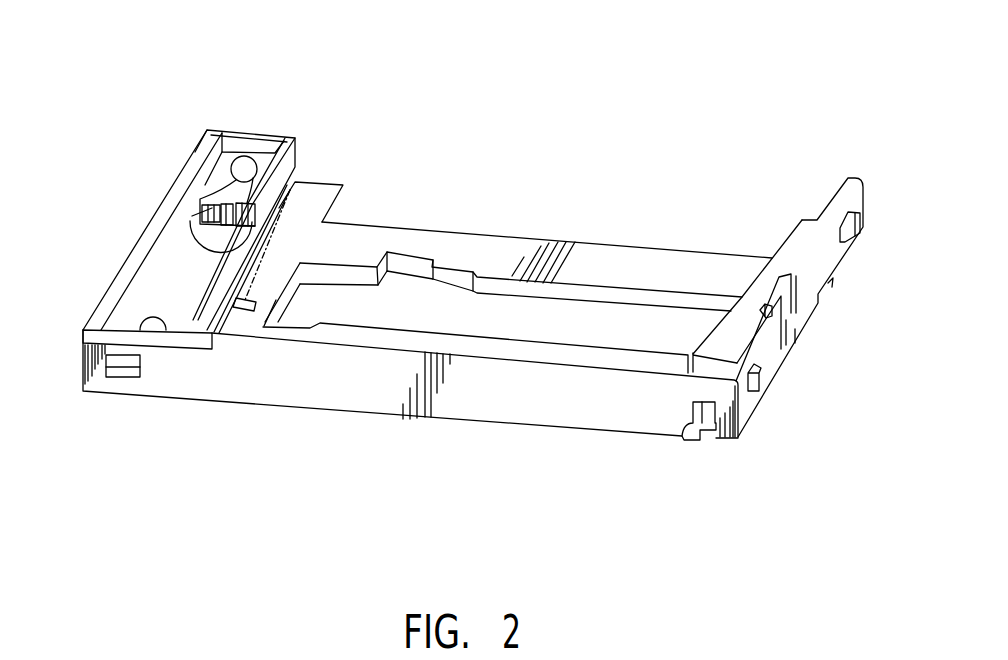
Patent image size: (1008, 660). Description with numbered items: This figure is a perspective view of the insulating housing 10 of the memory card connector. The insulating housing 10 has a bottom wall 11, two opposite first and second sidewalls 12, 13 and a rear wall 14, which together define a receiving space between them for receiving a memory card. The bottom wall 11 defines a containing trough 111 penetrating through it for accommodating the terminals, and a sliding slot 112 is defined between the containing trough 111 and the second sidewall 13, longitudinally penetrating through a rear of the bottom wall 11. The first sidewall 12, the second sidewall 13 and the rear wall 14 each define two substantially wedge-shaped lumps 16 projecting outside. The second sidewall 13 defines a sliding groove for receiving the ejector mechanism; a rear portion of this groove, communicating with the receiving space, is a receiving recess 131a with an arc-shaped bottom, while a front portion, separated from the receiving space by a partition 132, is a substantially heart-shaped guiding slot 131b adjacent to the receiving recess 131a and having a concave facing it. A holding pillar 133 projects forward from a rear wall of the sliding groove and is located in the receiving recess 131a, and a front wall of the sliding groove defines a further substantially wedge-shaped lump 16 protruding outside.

The insulating housing 10 is at (147, 108).
The bottom wall 11 is at (437, 240).
The containing trough 111 is at (654, 330).
The sliding slot 112 is at (243, 320).
The first sidewall 12 is at (793, 326).
The second sidewall 13 is at (158, 226).
The receiving recess 131a is at (173, 292).
The heart-shaped guiding slot 131b is at (240, 134).
The partition 132 is at (283, 181).
The holding pillar 133 is at (153, 332).
The rear wall 14 is at (408, 390).
The wedge-shaped lump 16 is at (863, 227).